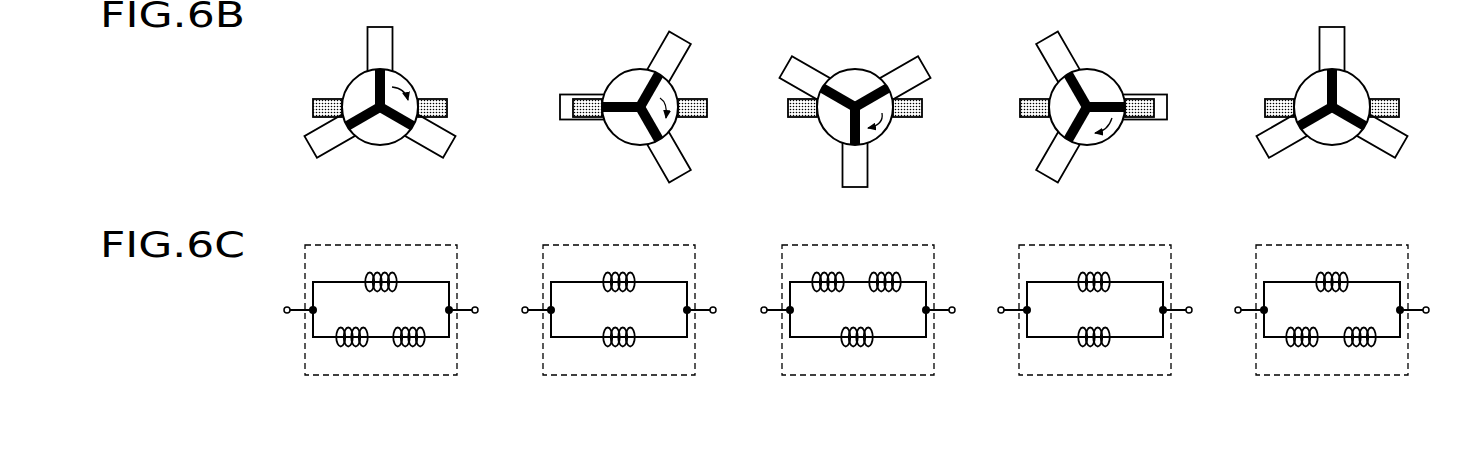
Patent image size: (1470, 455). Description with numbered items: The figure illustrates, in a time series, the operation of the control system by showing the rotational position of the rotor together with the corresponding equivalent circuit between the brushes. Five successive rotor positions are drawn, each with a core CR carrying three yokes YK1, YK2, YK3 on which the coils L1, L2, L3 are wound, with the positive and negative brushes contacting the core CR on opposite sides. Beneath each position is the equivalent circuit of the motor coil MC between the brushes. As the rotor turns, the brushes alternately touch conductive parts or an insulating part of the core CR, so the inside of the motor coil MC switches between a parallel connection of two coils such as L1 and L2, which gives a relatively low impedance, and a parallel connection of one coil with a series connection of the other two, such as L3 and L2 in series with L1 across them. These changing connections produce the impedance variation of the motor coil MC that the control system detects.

In FIG. 6B, the first yoke YK1 is at (386, 30).
In FIG. 6B, the second yoke YK2 is at (450, 143).
In FIG. 6B, the third yoke YK3 is at (315, 146).
In FIG. 6B, the coil L1 is at (365, 40).
In FIG. 6C, the coil L1 is at (870, 310).
In FIG. 6B, the coil L2 is at (423, 152).
In FIG. 6C, the coil L2 is at (855, 347).
In FIG. 6B, the coil L3 is at (312, 125).
In FIG. 6C, the coil L3 is at (842, 310).
In FIG. 6B, the core CR is at (380, 156).
In FIG. 6C, the motor coil MC is at (408, 236).